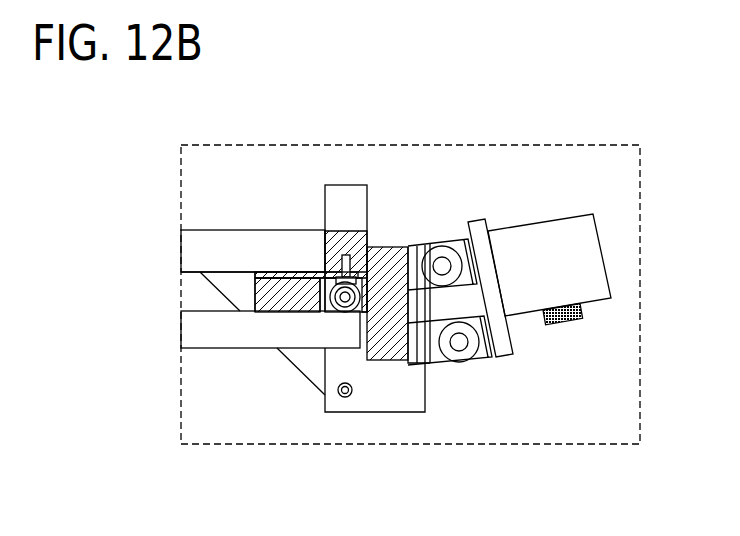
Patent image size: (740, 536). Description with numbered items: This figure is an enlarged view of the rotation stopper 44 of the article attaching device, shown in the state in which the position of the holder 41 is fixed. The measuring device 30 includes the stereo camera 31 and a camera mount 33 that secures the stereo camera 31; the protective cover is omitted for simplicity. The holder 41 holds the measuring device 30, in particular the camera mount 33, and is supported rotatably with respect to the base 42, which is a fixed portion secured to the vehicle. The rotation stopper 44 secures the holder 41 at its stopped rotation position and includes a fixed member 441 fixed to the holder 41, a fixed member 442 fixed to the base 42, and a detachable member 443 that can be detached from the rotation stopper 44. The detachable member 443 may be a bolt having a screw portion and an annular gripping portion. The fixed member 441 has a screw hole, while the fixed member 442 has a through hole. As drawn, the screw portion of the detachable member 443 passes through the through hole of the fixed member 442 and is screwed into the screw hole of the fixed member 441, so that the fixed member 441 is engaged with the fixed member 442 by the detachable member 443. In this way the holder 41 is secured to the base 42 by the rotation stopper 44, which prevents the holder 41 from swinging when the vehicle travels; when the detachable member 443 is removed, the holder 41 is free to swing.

The measuring device 30 is at (517, 192).
The stereo camera 31 is at (530, 229).
The camera mount 33 is at (387, 246).
The holder 41 is at (223, 228).
The base 42 is at (222, 349).
The rotation stopper 44 is at (355, 100).
The fixed member 441 is at (346, 242).
The fixed member 442 is at (272, 290).
The detachable member 443 is at (330, 293).